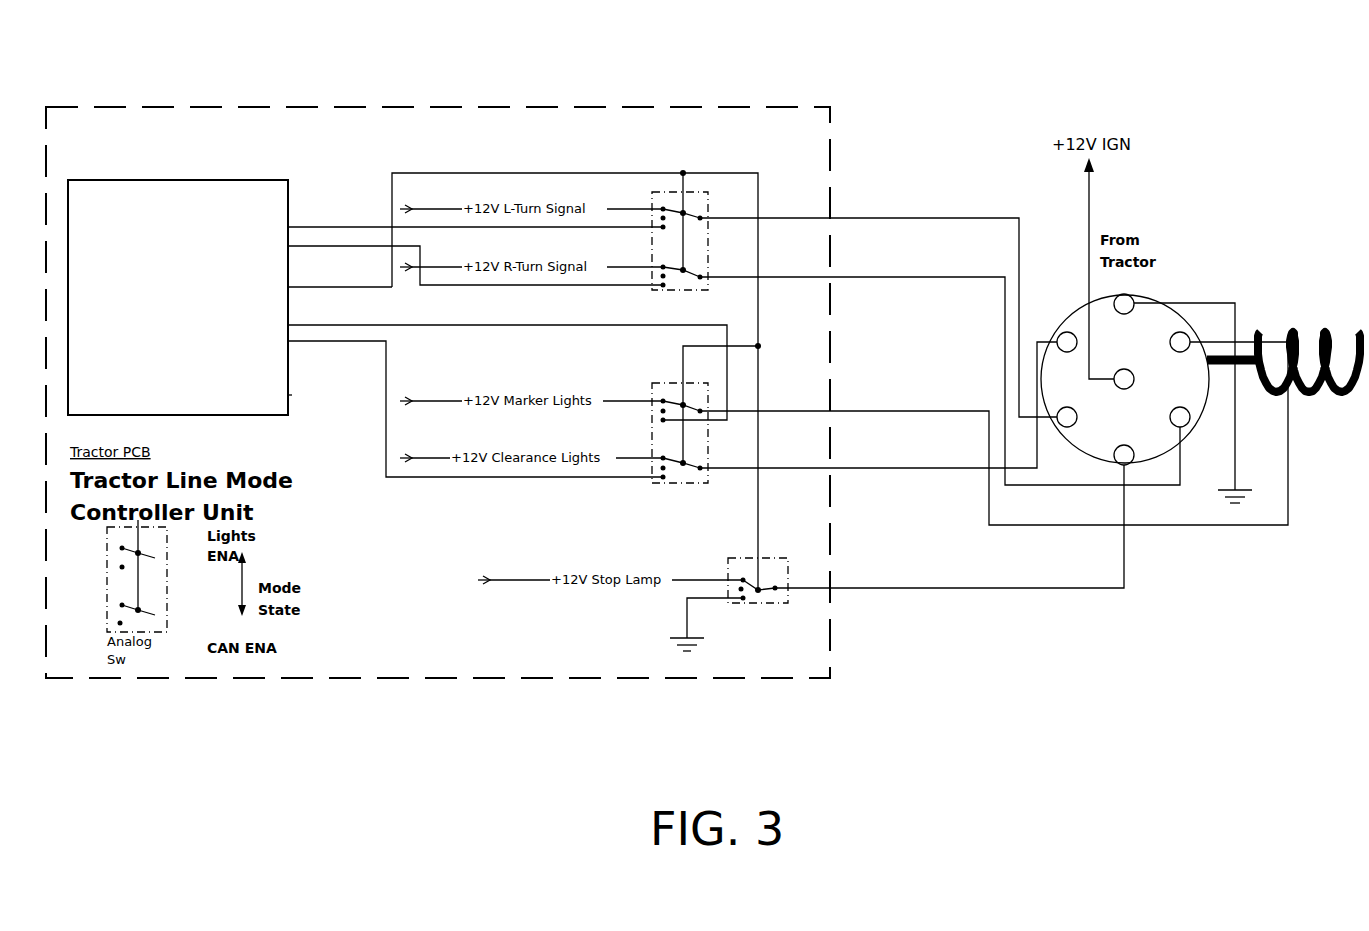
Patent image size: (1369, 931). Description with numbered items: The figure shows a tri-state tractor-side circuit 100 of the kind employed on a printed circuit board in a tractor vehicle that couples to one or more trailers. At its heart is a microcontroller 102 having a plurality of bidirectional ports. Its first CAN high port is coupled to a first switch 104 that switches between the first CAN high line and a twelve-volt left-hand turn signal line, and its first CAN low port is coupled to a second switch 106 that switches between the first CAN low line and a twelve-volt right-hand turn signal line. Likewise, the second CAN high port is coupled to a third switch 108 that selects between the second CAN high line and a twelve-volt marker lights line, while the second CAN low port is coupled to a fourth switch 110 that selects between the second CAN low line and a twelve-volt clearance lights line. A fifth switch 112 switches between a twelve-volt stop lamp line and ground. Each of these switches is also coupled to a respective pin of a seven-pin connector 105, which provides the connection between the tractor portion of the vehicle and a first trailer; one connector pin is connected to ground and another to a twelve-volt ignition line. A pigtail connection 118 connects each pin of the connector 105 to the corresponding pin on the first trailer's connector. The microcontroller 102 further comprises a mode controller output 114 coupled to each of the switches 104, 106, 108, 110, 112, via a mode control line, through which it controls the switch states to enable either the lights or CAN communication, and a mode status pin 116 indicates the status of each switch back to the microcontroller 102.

The tri-state tractor-side circuit 100 is at (626, 100).
The microcontroller 102 is at (184, 181).
The first switch 104 is at (695, 208).
The 7-pin connector 105 is at (1162, 298).
The second switch 106 is at (695, 268).
The third switch 108 is at (668, 394).
The fourth switch 110 is at (695, 461).
The fifth switch 112 is at (774, 580).
The mode controller output 114 is at (302, 281).
The mode status pin 116 is at (294, 388).
The pigtail connection 118 is at (1321, 316).